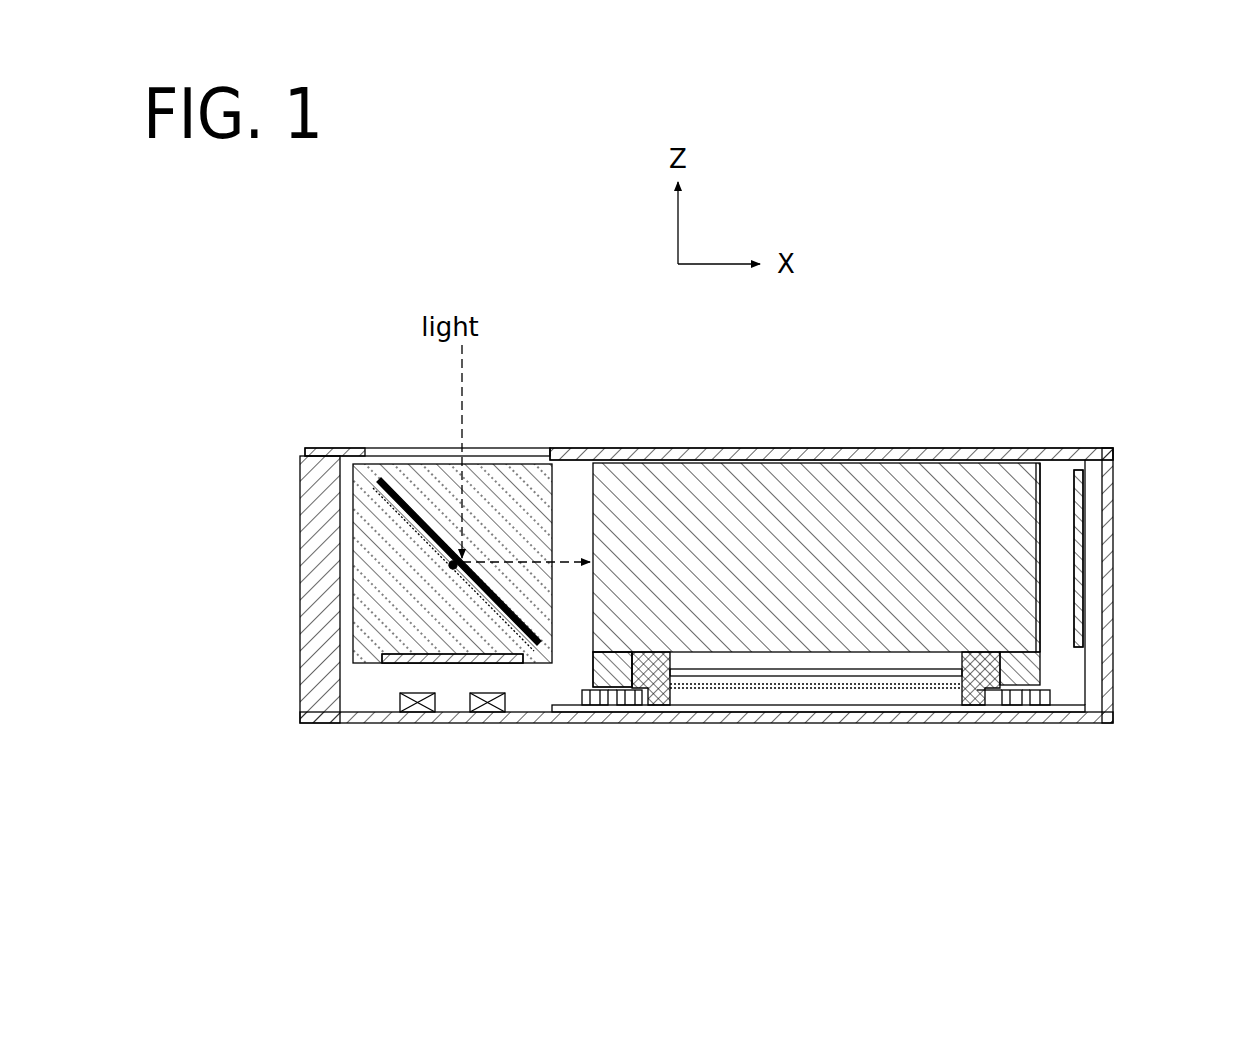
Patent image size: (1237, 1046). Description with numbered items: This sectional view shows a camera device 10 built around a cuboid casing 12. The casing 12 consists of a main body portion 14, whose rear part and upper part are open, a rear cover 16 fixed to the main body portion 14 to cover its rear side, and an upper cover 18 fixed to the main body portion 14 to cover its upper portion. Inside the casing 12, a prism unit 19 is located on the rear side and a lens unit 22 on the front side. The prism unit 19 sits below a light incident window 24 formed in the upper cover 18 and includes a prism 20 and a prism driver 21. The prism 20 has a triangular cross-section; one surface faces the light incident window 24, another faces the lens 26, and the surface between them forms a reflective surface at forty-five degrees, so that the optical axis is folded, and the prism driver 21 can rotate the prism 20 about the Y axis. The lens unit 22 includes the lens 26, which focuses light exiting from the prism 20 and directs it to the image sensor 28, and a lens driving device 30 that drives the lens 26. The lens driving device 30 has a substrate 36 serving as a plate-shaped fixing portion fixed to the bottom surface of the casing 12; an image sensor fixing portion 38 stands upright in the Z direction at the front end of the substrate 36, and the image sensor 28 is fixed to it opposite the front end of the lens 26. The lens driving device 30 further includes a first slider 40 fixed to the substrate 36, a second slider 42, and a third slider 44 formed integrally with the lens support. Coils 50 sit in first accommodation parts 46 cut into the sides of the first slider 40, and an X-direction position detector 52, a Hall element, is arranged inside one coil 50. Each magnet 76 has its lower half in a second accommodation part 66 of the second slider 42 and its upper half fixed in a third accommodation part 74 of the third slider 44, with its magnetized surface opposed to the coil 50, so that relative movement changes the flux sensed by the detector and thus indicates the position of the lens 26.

The camera device 10 is at (981, 310).
The casing 12 is at (826, 445).
The main body portion 14 is at (800, 723).
The rear cover 16 is at (305, 490).
The upper cover 18 is at (688, 448).
The prism unit 19 is at (388, 478).
The prism 20 is at (505, 478).
The prism driver 21 is at (403, 677).
The lens unit 22 is at (1045, 490).
The light incident window 24 is at (412, 448).
The lens 26 is at (768, 470).
The image sensor 28 is at (1080, 556).
The lens driving device 30 is at (590, 667).
The substrate 36 is at (745, 712).
The image sensor fixing portion 38 is at (1085, 512).
The first slider 40 is at (972, 684).
The second slider 42 is at (965, 688).
The third slider 44 is at (965, 668).
The first accommodation part 46 is at (655, 705).
The coil 50 is at (590, 705).
The X-direction position detector 52 is at (1015, 705).
The second accommodation part 66 is at (625, 705).
The third accommodation part 74 is at (633, 680).
The magnet 76 is at (600, 690).